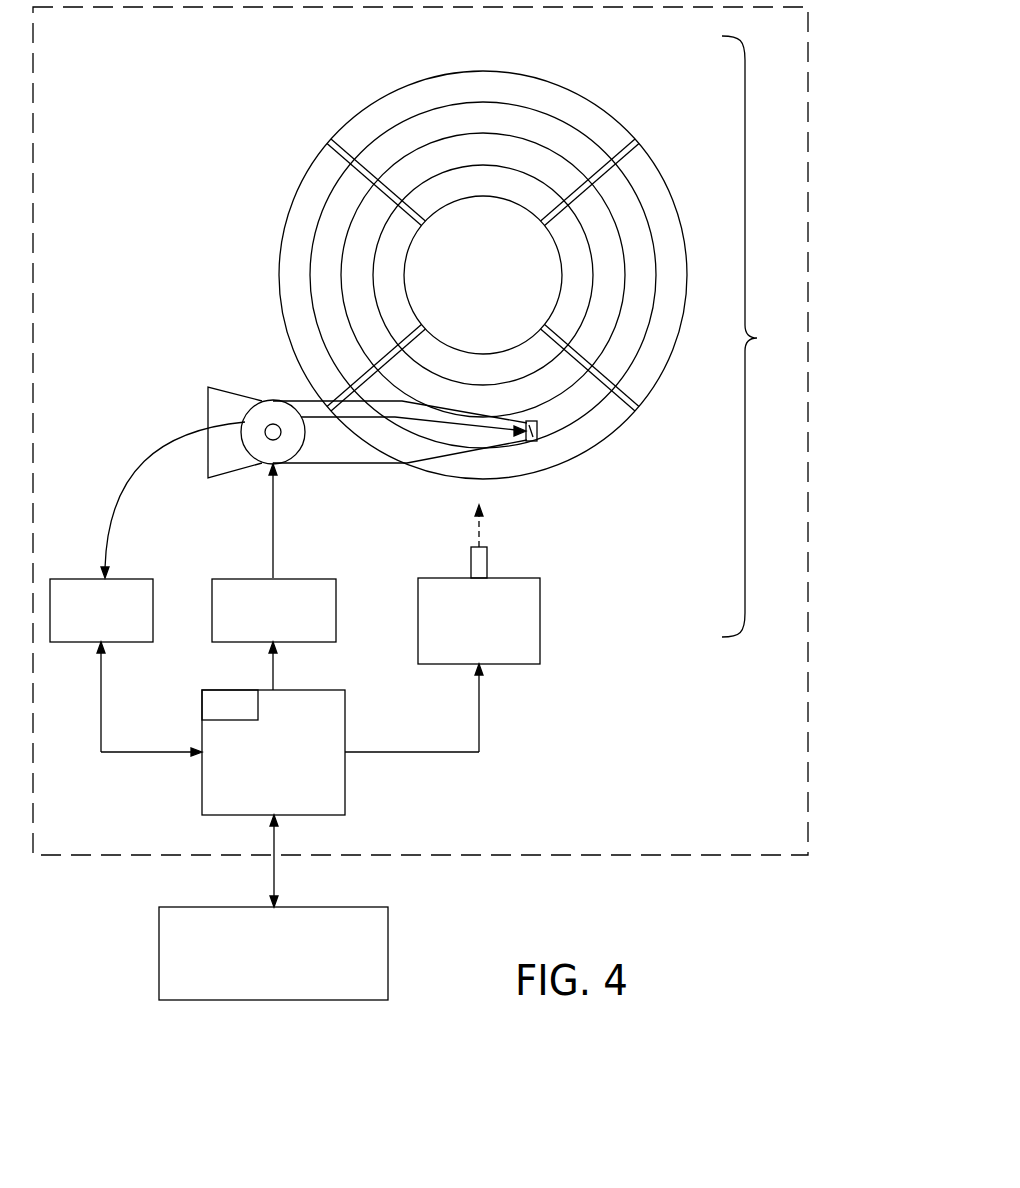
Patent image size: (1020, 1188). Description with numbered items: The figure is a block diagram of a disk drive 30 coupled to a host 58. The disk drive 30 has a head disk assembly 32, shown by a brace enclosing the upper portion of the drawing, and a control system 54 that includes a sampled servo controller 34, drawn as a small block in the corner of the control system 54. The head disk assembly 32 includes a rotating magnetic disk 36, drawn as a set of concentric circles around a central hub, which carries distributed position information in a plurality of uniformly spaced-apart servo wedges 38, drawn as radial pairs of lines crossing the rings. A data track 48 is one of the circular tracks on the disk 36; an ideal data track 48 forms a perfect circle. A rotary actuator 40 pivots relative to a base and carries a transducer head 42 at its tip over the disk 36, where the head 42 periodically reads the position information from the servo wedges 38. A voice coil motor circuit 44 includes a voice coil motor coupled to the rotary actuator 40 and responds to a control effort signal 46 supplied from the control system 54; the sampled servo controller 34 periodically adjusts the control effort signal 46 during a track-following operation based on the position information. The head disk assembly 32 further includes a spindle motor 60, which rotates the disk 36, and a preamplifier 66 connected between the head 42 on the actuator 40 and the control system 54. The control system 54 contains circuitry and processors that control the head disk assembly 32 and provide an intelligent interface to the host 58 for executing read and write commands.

The disk drive 30 is at (698, 855).
The head disk assembly 32 is at (758, 336).
The sampled servo controller 34 is at (220, 717).
The rotating magnetic disk 36 is at (372, 103).
The servo wedges 38 is at (338, 150).
The rotary actuator 40 is at (371, 445).
The transducer head 42 is at (534, 442).
The voice coil motor circuit 44 is at (263, 633).
The control effort signal 46 is at (275, 674).
The ideal data track 48 is at (315, 190).
The control system 54 is at (263, 800).
The host 58 is at (264, 975).
The spindle motor 60 is at (469, 657).
The preamplifier 66 is at (91, 633).